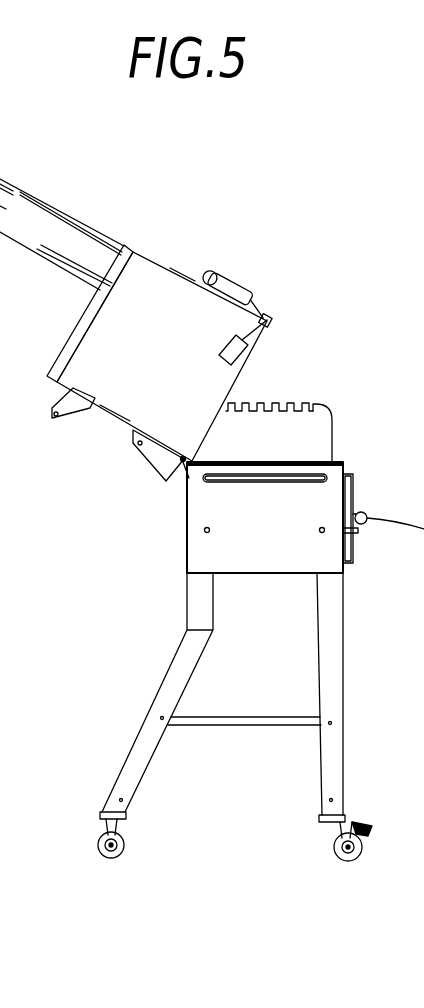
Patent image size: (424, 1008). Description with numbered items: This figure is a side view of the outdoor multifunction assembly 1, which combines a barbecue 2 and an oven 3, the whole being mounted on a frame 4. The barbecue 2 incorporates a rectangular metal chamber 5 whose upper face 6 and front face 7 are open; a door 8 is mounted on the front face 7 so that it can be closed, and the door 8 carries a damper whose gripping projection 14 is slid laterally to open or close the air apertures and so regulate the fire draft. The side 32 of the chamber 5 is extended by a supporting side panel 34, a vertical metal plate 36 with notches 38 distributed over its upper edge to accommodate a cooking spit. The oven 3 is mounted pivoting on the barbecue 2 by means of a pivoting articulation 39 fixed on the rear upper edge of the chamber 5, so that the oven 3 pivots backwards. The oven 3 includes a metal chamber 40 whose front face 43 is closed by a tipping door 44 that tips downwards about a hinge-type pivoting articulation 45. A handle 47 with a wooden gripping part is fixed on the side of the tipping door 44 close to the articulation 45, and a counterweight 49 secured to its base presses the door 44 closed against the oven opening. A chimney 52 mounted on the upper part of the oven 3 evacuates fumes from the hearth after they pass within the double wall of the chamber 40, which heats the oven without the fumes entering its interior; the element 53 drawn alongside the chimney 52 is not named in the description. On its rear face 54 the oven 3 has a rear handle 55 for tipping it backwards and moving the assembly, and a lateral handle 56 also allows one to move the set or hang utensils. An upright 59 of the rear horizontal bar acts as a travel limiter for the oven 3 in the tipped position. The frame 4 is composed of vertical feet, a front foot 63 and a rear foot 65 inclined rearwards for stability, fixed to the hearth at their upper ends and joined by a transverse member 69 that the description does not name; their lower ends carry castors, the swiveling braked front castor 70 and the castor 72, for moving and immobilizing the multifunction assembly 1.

The multifunction assembly 1 is at (342, 195).
The barbecue 2 is at (143, 532).
The oven 3 is at (84, 486).
The frame 4 is at (372, 707).
The chamber 5 is at (177, 556).
The upper face 6 is at (293, 378).
The front face 7 is at (372, 487).
The door 8 is at (353, 551).
The gripping projection 14 is at (356, 532).
The side 32 is at (193, 527).
The supporting side panel 34 is at (365, 433).
The vertical metal plate 36 is at (307, 440).
The notches 38 is at (257, 403).
The pivoting articulation 39 is at (180, 463).
The metal chamber 40 is at (81, 341).
The front face 43 is at (158, 277).
The door 44 is at (223, 278).
The pivoting articulation 45 is at (264, 319).
The handle 47 is at (250, 300).
The counterweight 49 is at (223, 340).
The chimney 52 is at (40, 212).
The upper rail 53 is at (182, 273).
The rear face 54 is at (110, 413).
The rear handle 55 is at (50, 420).
The lateral handle 56 is at (265, 483).
The upright 59 is at (157, 461).
The vertical foot 63 is at (333, 770).
The rear foot 65 is at (140, 760).
The crossbar 69 is at (258, 724).
The front castor 70 is at (362, 863).
The castor 72 is at (124, 847).